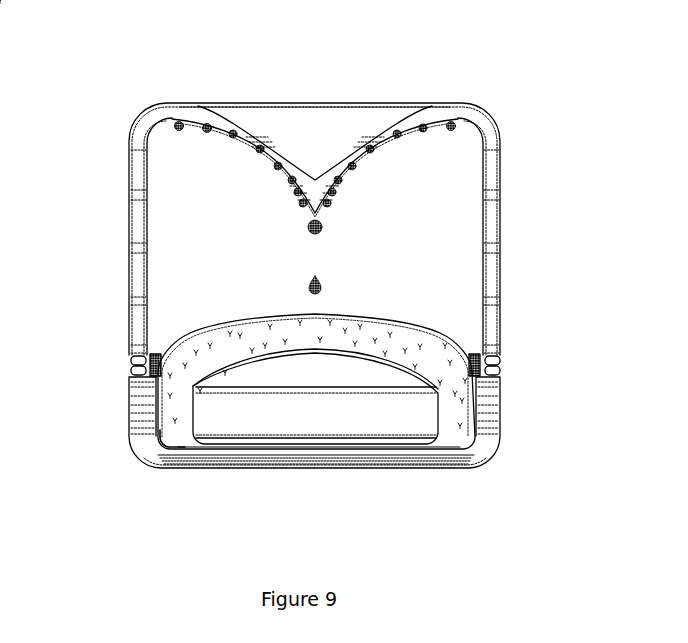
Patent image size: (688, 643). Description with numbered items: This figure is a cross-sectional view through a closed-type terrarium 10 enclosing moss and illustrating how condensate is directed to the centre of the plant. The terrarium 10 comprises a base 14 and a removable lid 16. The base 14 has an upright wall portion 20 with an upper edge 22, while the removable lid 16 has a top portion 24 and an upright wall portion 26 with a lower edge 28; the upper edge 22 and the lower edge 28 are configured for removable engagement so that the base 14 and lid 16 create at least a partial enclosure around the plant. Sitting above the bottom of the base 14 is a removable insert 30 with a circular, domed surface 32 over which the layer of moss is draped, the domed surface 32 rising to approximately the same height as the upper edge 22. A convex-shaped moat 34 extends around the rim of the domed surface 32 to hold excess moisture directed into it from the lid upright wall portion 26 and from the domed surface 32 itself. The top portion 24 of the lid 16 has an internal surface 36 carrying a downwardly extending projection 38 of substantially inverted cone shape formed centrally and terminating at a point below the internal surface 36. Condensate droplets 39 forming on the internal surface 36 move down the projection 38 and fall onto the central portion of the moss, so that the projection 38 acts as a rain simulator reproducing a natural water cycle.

The terrarium 10 is at (536, 101).
The base 14 is at (498, 450).
The removable lid 16 is at (503, 212).
The upright wall portion 20 is at (498, 410).
The upper edge 22 is at (127, 373).
The top portion 24 is at (362, 101).
The upright wall portion 26 is at (493, 277).
The lower edge 28 is at (127, 350).
The removable insert 30 is at (247, 428).
The domed surface 32 is at (323, 361).
The moat 34 is at (163, 449).
The internal surface 36 is at (161, 134).
The downwardly extending projection 38 is at (342, 159).
The condensate droplets 39 is at (211, 137).